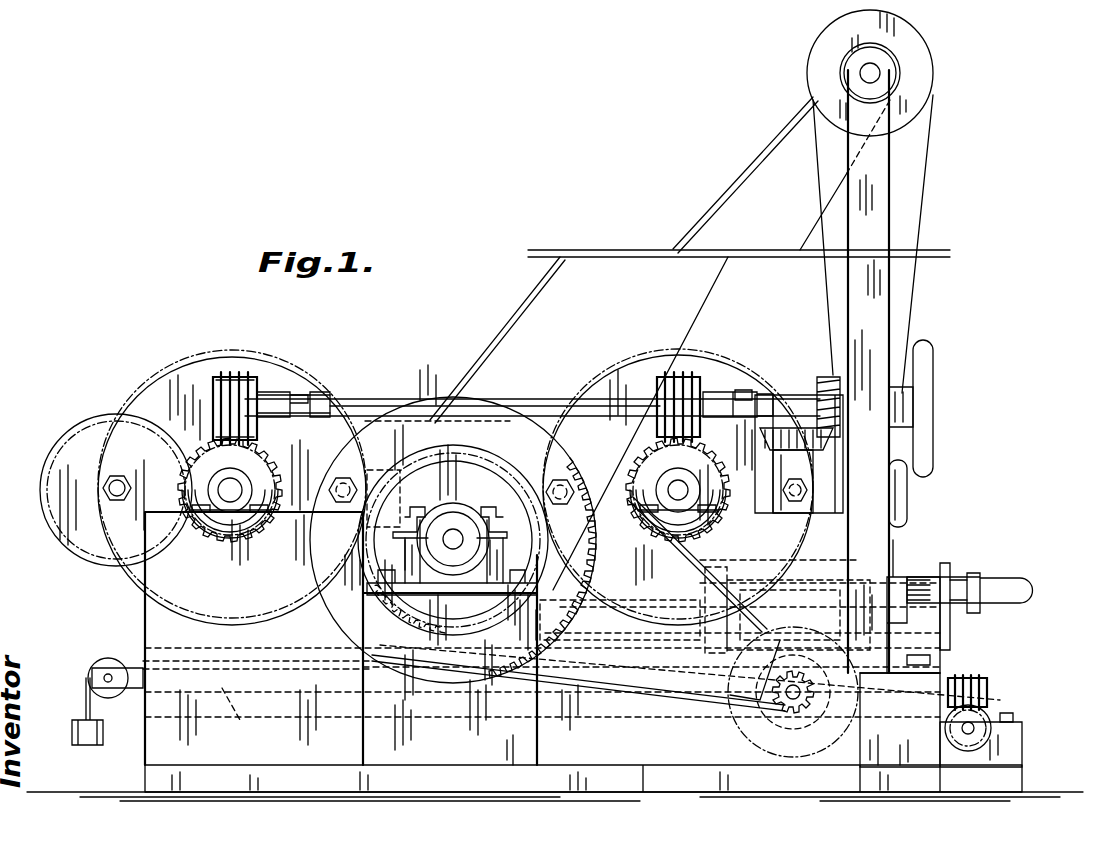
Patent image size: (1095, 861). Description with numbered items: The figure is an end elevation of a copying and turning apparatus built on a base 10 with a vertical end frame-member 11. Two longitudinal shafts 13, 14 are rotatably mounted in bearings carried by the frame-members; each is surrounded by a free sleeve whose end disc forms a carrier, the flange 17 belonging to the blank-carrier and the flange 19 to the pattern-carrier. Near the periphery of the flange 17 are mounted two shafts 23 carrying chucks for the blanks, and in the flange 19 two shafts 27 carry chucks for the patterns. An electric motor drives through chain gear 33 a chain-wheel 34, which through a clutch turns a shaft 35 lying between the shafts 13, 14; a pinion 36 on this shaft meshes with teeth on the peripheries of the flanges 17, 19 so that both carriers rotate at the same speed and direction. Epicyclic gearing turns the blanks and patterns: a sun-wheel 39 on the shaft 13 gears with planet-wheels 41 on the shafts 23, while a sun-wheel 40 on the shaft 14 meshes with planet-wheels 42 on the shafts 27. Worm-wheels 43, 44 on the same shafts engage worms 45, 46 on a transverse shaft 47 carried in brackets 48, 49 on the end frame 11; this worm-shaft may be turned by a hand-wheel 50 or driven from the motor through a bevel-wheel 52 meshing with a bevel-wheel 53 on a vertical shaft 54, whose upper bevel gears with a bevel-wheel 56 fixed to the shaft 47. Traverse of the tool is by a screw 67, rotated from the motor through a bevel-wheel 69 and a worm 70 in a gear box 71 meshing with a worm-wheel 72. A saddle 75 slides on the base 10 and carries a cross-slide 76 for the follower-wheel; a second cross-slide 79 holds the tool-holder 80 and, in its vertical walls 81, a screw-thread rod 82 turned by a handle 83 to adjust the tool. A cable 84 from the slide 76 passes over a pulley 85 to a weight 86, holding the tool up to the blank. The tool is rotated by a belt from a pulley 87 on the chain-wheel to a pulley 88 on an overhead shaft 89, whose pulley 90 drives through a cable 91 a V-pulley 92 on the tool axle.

The base 10 is at (566, 708).
The end frame-member 11 is at (143, 612).
The shaft 13 is at (587, 517).
The shaft 14 is at (222, 498).
The flange 17 is at (623, 363).
The flange 19 is at (200, 357).
The shaft 23 is at (573, 488).
The shaft 27 is at (118, 478).
The chain gear 33 is at (633, 698).
The chain-wheel 34 is at (570, 612).
The shaft 35 is at (460, 540).
The pinion 36 is at (392, 607).
The sun-wheel 39 is at (676, 505).
The sun-wheel 40 is at (240, 530).
The planet-wheel 41 is at (593, 387).
The planet-wheel 42 is at (130, 387).
The worm-wheel 43 is at (747, 420).
The worm-wheel 44 is at (213, 440).
The worm 45 is at (667, 378).
The worm 46 is at (246, 378).
The transverse shaft 47 is at (522, 412).
The bracket 48 is at (283, 392).
The bracket 49 is at (770, 433).
The hand-wheel 50 is at (933, 441).
The bevel-wheel 52 is at (718, 712).
The bevel-wheel 53 is at (760, 668).
The vertical shaft 54 is at (835, 560).
The bevel-wheel 56 is at (826, 377).
The screw 67 is at (972, 727).
The bevel-wheel 69 is at (793, 692).
The worm 70 is at (985, 688).
The gear box 71 is at (905, 748).
The worm-wheel 72 is at (1013, 718).
The saddle 75 is at (244, 720).
The cross-slide 76 is at (927, 666).
The cross-slide 79 is at (895, 617).
The tool-holder 80 is at (905, 493).
The vertical wall 81 is at (730, 645).
The screw-thread rod 82 is at (955, 640).
The handle 83 is at (1000, 575).
The cable 84 is at (262, 660).
The pulley 85 is at (110, 665).
The weight 86 is at (75, 720).
The pulley 87 is at (433, 437).
The pulley 88 is at (845, 60).
The overhead shaft 89 is at (880, 73).
The pulley 90 is at (905, 47).
The cable 91 is at (818, 178).
The V-pulley 92 is at (918, 497).